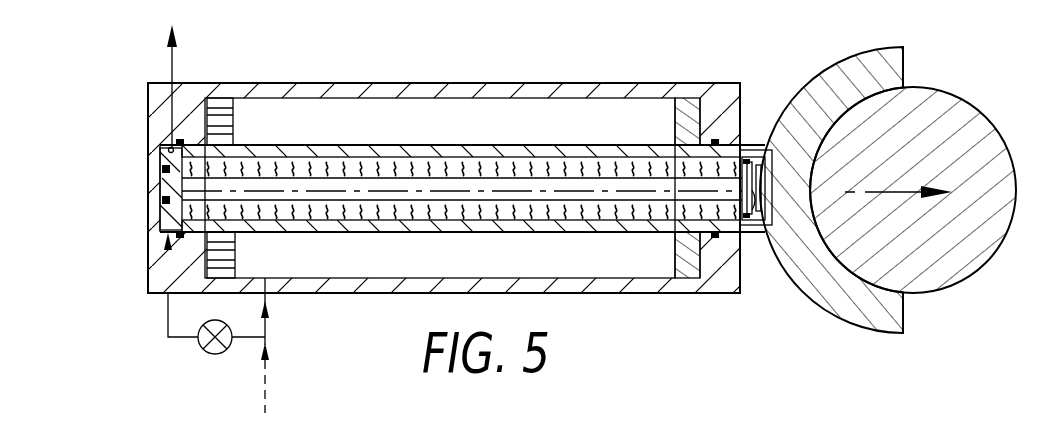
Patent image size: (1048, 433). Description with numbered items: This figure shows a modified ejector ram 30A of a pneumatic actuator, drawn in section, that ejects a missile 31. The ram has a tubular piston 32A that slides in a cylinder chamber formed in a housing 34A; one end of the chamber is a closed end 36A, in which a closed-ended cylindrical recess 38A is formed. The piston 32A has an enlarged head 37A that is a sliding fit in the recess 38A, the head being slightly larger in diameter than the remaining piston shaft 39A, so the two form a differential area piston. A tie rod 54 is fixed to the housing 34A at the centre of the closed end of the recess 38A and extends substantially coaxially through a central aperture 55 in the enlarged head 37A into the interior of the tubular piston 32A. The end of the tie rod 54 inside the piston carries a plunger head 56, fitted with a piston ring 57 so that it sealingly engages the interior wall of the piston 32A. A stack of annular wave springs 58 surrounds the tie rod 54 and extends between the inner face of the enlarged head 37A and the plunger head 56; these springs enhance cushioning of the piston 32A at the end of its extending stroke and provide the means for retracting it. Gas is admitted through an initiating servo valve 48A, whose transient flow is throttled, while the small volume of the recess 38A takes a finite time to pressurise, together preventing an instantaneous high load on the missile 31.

The ejector ram 30A is at (553, 76).
The missile 31 is at (925, 257).
The piston 32A is at (429, 128).
The housing 34A is at (254, 90).
The closed end of cylinder chamber 36A is at (158, 118).
The enlarged head 37A is at (163, 214).
The cylindrical recess 38A is at (160, 159).
The piston shaft 39A is at (598, 228).
The initiating servo valve 48A is at (222, 352).
The tie rod 54 is at (378, 184).
The central aperture 55 is at (164, 199).
The plunger head 56 is at (756, 197).
The piston ring 57 is at (752, 178).
The annular wave springs 58 is at (542, 170).